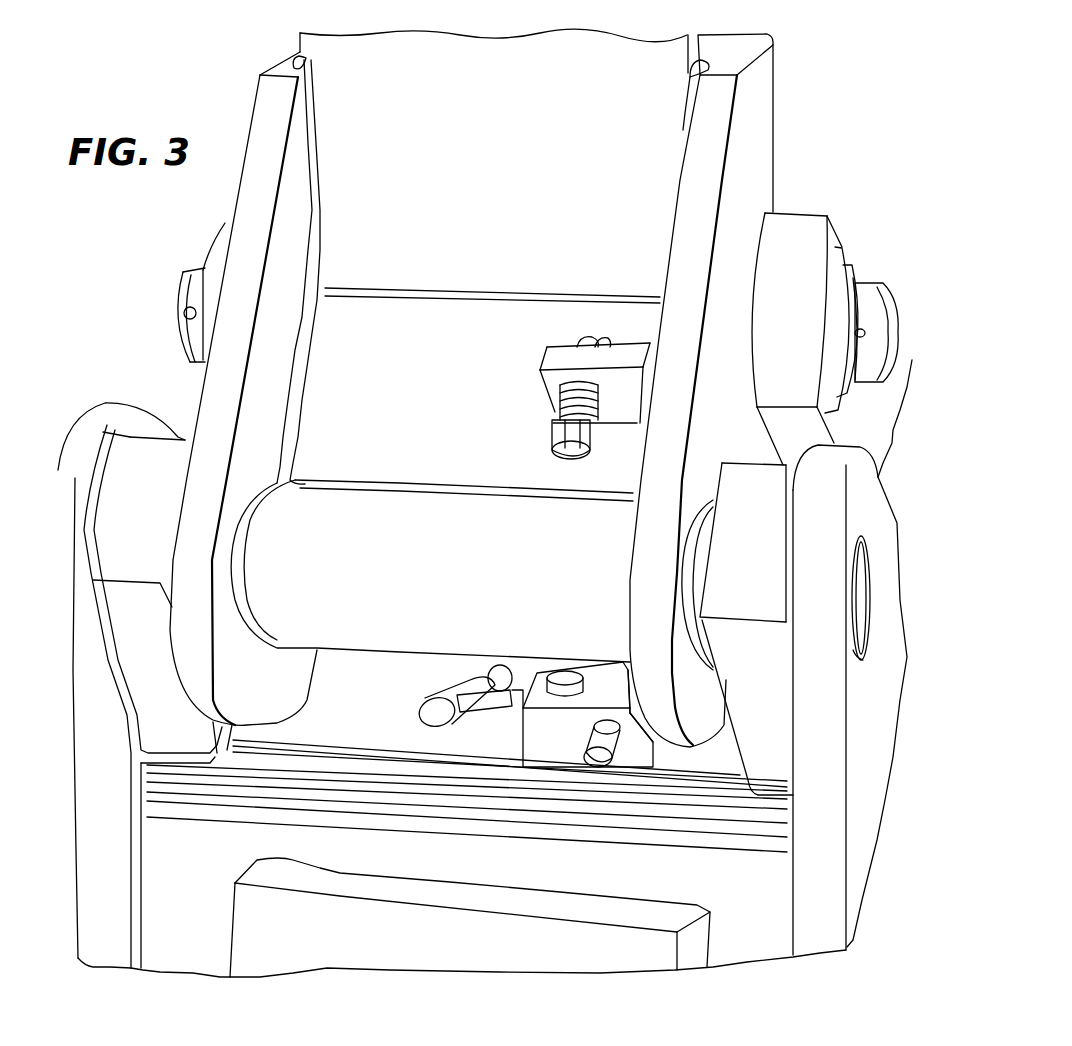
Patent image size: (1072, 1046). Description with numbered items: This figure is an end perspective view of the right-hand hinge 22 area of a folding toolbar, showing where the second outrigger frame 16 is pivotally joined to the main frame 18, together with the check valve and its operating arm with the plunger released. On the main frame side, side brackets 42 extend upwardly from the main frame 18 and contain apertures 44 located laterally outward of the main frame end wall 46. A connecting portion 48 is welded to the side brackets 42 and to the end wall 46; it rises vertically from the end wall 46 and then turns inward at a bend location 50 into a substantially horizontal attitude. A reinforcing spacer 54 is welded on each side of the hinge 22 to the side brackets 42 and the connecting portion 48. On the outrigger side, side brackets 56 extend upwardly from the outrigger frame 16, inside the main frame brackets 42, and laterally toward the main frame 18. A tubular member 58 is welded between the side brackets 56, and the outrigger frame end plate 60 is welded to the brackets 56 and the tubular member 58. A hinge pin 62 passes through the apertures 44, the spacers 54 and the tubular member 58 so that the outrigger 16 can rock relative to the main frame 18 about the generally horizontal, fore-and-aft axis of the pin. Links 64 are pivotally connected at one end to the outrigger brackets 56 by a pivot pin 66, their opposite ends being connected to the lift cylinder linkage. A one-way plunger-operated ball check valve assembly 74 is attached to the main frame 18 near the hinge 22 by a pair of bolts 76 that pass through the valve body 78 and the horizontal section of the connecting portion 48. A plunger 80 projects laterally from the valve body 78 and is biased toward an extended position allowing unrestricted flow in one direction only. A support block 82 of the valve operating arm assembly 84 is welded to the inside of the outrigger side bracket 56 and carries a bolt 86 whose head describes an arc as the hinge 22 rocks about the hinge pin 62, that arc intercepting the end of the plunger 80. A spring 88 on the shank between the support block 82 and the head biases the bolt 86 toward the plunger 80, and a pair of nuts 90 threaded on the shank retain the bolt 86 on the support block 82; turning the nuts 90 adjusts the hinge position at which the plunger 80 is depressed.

The second outrigger frame 16 is at (300, 52).
The main frame 18 is at (785, 915).
The hinge 22 is at (960, 152).
The side brackets 42 is at (113, 410).
The apertures 44 is at (863, 657).
The main frame end wall 46 is at (300, 932).
The connecting portion 48 is at (270, 827).
The bend location 50 is at (326, 770).
The reinforcing spacer 54 is at (134, 675).
The side brackets 56 is at (262, 333).
The tubular member 58 is at (437, 578).
The outrigger frame end plate 60 is at (490, 101).
The hinge pin 62 is at (860, 613).
The links 64 is at (225, 223).
The pivot pin 66 is at (899, 331).
The ball check valve assembly 74 is at (540, 795).
The bolts 76 is at (585, 680).
The valve body 78 is at (523, 740).
The plunger 80 is at (597, 762).
The support block 82 is at (567, 345).
The valve operating arm assembly 84 is at (535, 352).
The bolt 86 is at (581, 452).
The spring 88 is at (562, 400).
The nuts 90 is at (598, 345).